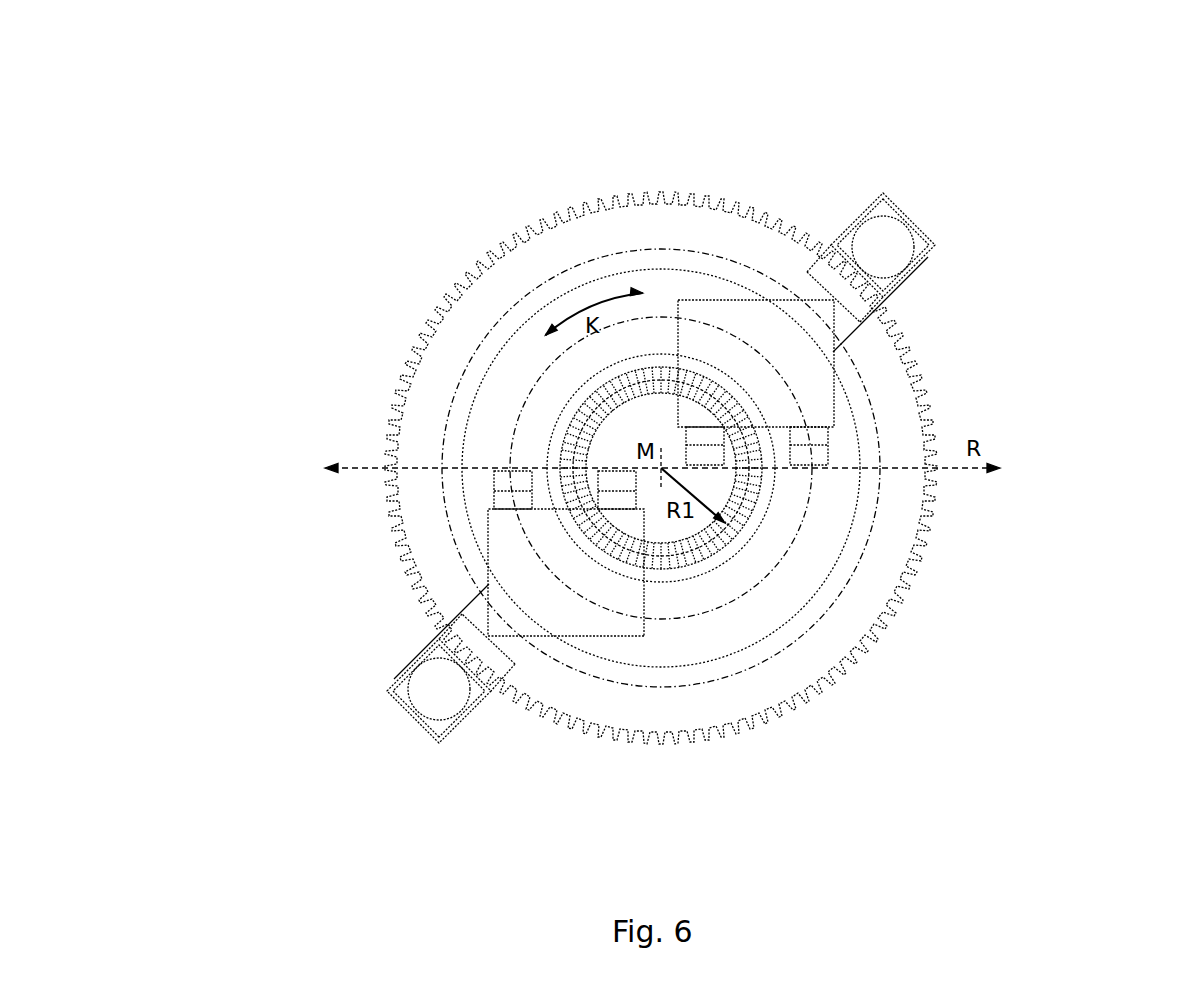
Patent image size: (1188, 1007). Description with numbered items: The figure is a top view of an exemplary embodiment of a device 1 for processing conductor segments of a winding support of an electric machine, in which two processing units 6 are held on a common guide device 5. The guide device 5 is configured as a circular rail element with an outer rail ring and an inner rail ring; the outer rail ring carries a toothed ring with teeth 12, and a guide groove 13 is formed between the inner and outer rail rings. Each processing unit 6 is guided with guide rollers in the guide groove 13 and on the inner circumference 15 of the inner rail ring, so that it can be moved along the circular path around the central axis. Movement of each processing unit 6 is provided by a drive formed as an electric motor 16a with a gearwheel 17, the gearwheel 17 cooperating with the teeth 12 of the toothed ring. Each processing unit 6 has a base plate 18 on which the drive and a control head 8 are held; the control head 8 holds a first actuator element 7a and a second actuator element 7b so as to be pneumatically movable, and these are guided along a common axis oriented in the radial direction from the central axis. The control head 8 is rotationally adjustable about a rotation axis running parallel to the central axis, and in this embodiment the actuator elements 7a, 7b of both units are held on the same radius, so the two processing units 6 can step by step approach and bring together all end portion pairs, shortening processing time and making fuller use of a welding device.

The device 1 is at (963, 152).
The guide device 5 is at (658, 290).
The processing unit 6 is at (795, 273).
The first actuator element 7a is at (810, 475).
The second actuator element 7b is at (728, 472).
The control head 8 is at (803, 378).
The teeth 12 is at (498, 242).
The guide groove 13 is at (868, 513).
The inner circumference 15 is at (740, 597).
The electric motor 16a is at (883, 248).
The gearwheel 17 is at (858, 220).
The base plate 18 is at (857, 302).